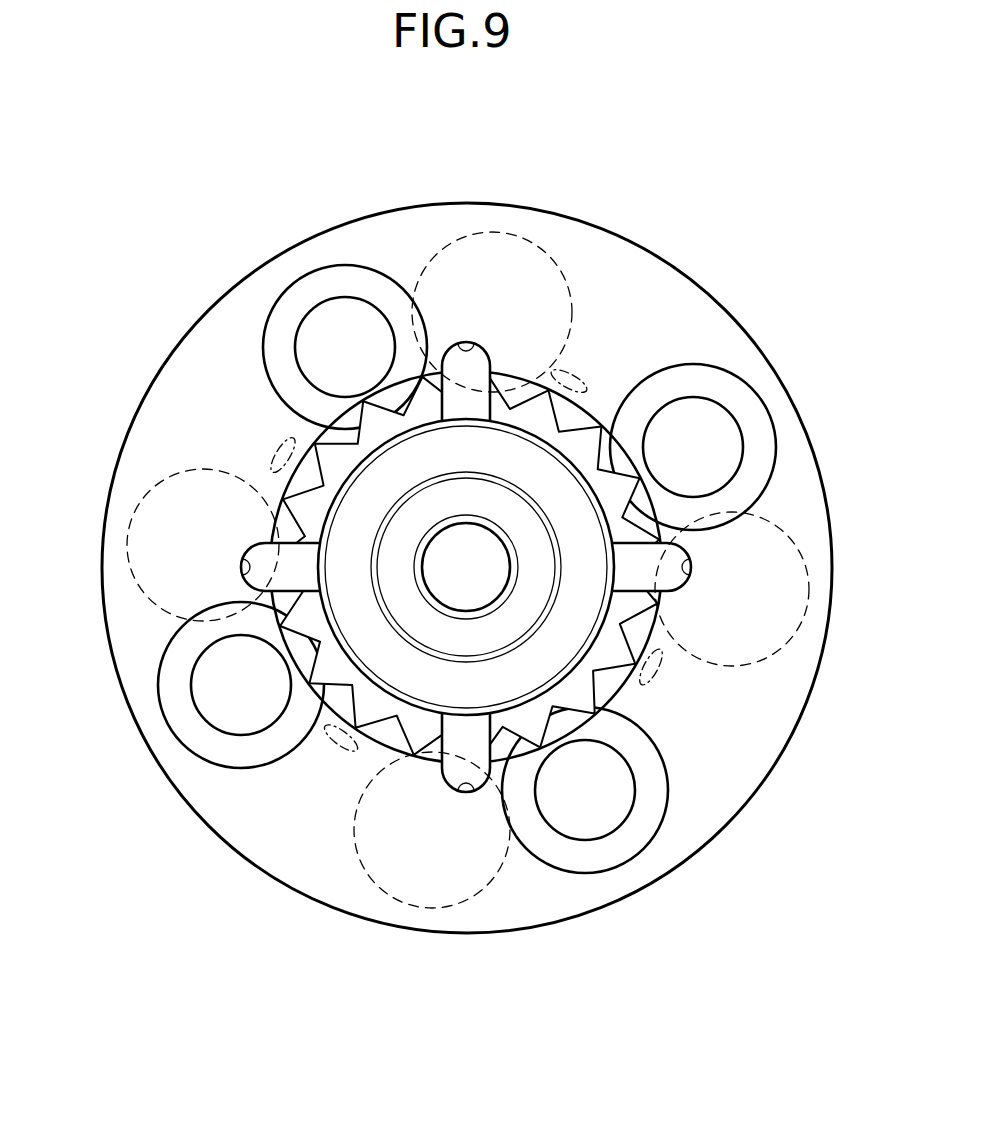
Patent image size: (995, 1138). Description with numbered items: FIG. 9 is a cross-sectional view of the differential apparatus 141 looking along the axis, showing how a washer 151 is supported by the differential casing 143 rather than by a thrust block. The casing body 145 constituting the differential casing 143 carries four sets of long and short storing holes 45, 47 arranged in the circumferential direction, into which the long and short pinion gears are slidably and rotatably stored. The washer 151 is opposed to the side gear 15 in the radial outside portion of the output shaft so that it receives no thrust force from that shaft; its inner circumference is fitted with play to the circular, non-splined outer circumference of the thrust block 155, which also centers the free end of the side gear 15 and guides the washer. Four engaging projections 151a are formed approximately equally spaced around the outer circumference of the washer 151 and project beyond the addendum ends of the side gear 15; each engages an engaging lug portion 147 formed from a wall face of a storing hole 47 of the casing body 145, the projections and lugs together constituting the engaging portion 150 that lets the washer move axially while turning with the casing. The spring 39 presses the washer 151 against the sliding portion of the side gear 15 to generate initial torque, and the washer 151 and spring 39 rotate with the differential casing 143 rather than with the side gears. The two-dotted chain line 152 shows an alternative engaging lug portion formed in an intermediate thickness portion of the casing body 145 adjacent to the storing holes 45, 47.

The differential apparatus 141 is at (464, 544).
The differential casing 143 is at (467, 516).
The casing body 145 is at (705, 290).
The storing holes 45 is at (272, 310).
The storing holes 47 is at (555, 257).
The spring 39 is at (489, 527).
The side gear 15 is at (520, 390).
The engaging lug portion 147 is at (428, 376).
The engaging portion 150 is at (464, 556).
The washer 151 is at (555, 477).
The engaging projections 151a is at (472, 357).
The engaging lug portion 152 is at (578, 375).
The thrust block 155 is at (407, 537).